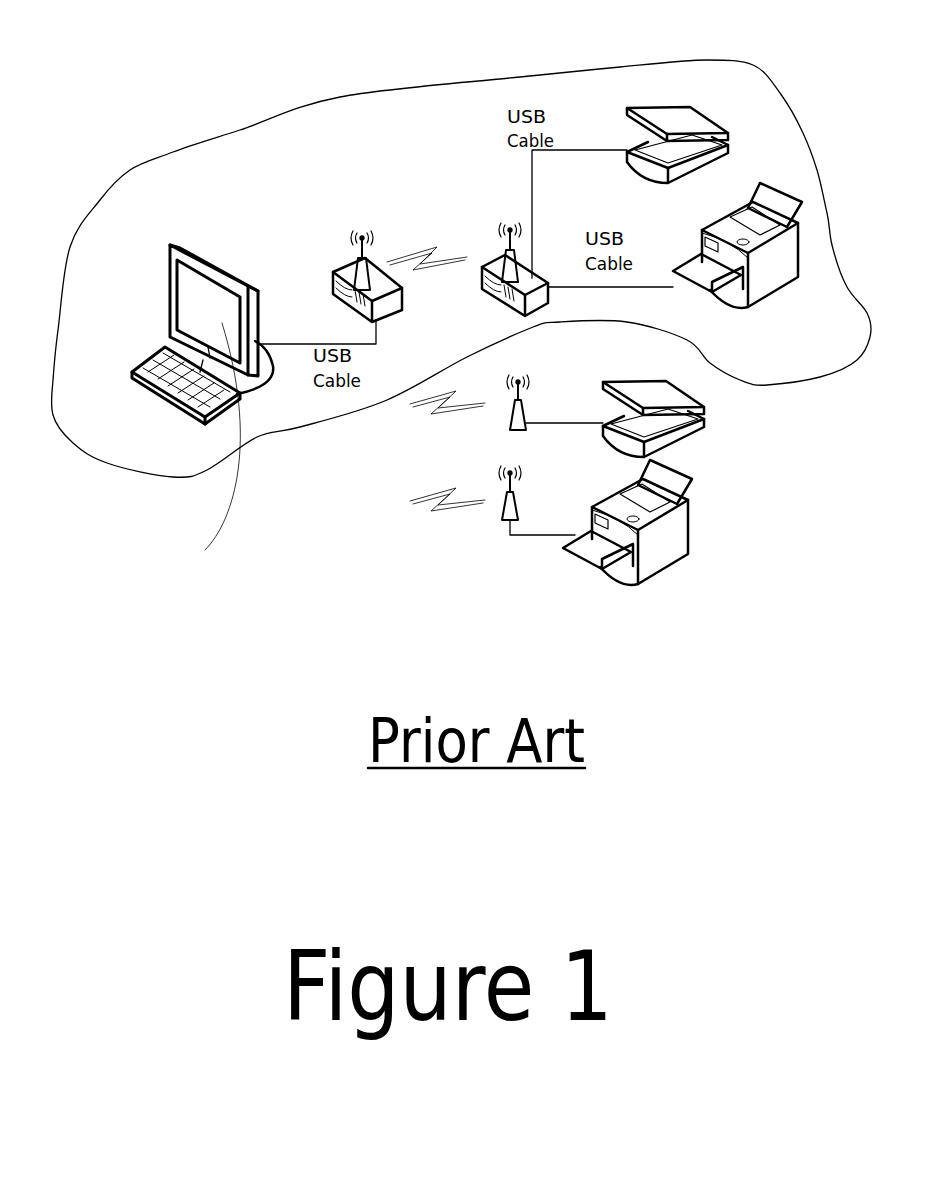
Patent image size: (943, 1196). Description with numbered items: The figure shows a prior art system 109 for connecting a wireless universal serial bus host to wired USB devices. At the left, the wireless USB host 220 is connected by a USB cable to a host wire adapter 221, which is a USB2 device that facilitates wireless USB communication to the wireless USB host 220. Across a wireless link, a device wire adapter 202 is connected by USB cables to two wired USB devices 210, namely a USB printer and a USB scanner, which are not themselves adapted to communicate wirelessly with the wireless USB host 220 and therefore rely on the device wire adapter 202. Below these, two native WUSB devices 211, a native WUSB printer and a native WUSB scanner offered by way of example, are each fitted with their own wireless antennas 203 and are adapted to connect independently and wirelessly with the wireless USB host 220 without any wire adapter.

The system 109 is at (444, 248).
The wireless USB host 220 is at (152, 428).
The host wire adapter (HWA) 221 is at (354, 257).
The device wire adapter (DWA) 202 is at (505, 253).
The wired USB devices 210 is at (727, 138).
The wireless USB antenna 203 is at (500, 457).
The native WUSB devices 211 is at (695, 516).